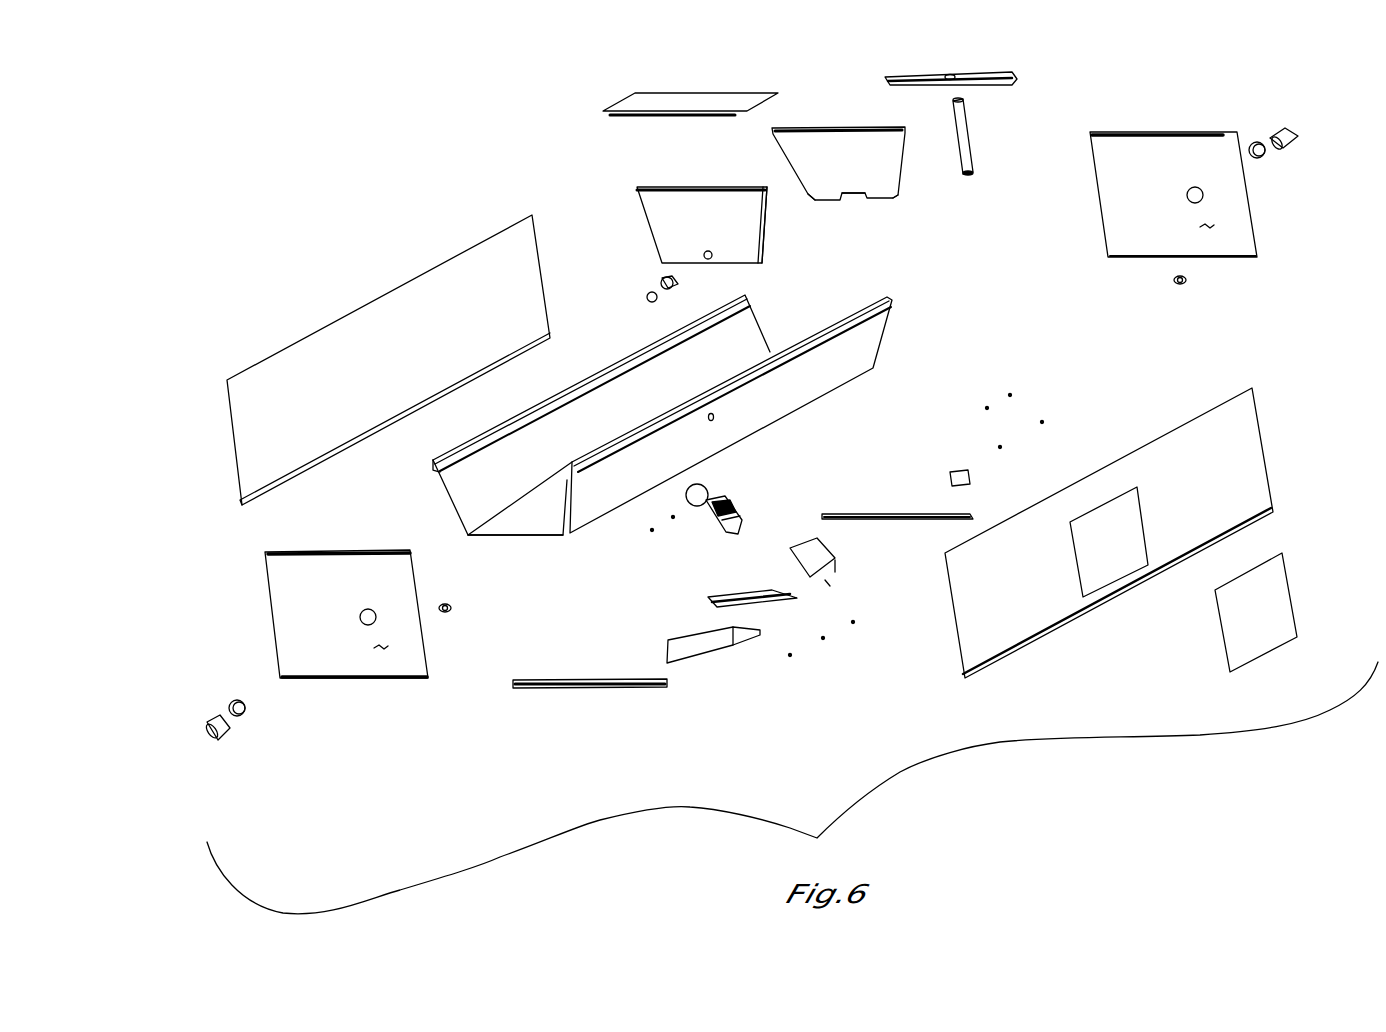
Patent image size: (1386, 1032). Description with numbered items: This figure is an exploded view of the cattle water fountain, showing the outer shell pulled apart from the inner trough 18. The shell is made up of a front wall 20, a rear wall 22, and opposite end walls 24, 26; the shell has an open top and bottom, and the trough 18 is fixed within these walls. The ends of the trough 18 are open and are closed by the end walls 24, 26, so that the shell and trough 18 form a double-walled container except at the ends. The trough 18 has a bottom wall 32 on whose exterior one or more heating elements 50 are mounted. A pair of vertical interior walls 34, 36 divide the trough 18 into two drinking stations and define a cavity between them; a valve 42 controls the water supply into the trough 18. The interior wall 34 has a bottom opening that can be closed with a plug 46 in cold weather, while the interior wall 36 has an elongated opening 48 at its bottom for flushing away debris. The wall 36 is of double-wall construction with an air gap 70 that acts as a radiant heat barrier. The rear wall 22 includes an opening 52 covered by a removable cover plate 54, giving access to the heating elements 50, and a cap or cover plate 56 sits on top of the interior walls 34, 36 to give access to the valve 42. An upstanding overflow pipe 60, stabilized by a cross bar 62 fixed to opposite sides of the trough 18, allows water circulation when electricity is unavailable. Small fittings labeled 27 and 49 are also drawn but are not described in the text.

The inner trough 18 is at (742, 322).
The front wall 20 is at (530, 285).
The rear wall 22 is at (1245, 462).
The end wall 24 is at (283, 592).
The end wall 26 is at (1117, 192).
The bushing 27 is at (1290, 125).
The bottom wall 32 is at (508, 528).
The vertical interior wall 34 is at (800, 150).
The vertical interior wall 36 is at (650, 203).
The valve 42 is at (730, 500).
The plug 46 is at (685, 250).
The elongated opening 48 is at (852, 195).
The feet 49 is at (808, 200).
The heating elements 50 is at (790, 548).
The opening 52 is at (1120, 530).
The cover plate 54 is at (1270, 600).
The cap or cover plate 56 is at (708, 100).
The upstanding pipe 60 is at (968, 130).
The cross bar 62 is at (985, 72).
The air gap 70 is at (763, 262).